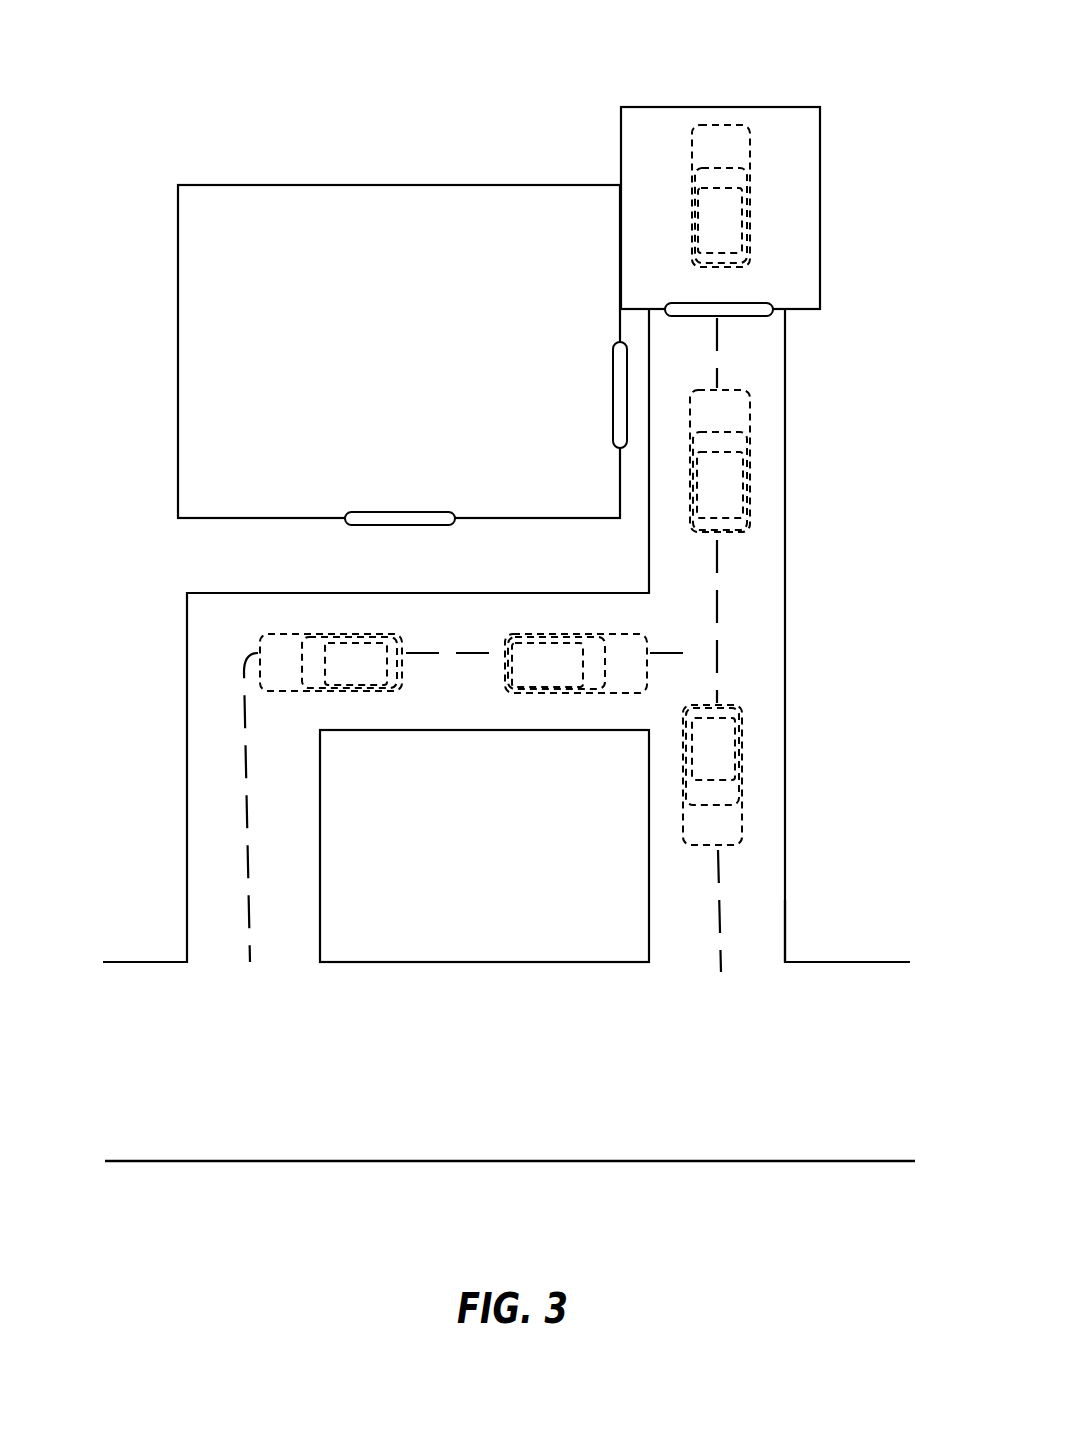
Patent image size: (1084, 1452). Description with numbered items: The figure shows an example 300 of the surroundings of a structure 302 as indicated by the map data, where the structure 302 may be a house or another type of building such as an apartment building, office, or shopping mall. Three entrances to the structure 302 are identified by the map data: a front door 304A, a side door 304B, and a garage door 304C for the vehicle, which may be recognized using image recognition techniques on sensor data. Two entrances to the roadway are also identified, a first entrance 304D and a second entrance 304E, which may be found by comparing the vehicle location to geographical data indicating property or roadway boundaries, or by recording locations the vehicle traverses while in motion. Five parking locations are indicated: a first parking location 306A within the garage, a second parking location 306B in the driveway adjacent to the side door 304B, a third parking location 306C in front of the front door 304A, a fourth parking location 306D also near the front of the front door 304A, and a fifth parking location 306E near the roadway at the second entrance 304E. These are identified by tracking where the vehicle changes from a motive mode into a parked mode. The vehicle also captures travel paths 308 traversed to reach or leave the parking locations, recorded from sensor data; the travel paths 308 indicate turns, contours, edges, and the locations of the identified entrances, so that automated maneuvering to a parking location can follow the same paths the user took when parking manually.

The example of the surroundings of a structure 300 is at (220, 43).
The structure 302 is at (381, 361).
The front door 304A is at (397, 525).
The side door 304B is at (613, 394).
The garage door 304C is at (740, 316).
The first entrance 304D is at (285, 957).
The second entrance 304E is at (750, 960).
The first parking location 306A is at (697, 158).
The second parking location 306B is at (696, 423).
The third parking location 306C is at (331, 672).
The fourth parking location 306D is at (526, 672).
The fifth parking location 306E is at (689, 835).
The travel paths 308 is at (243, 748).